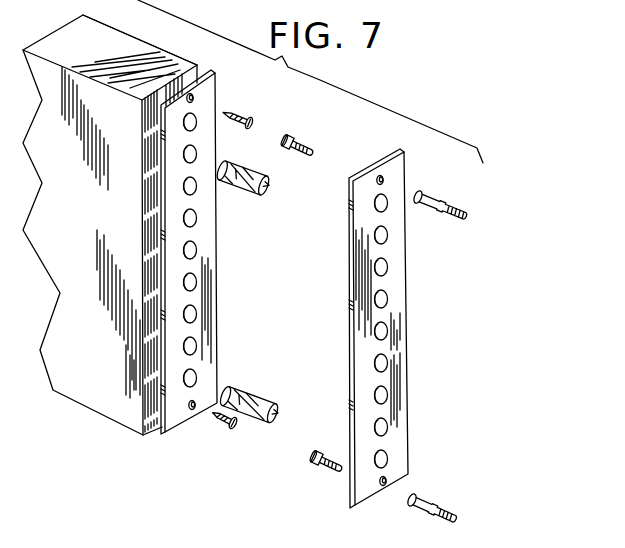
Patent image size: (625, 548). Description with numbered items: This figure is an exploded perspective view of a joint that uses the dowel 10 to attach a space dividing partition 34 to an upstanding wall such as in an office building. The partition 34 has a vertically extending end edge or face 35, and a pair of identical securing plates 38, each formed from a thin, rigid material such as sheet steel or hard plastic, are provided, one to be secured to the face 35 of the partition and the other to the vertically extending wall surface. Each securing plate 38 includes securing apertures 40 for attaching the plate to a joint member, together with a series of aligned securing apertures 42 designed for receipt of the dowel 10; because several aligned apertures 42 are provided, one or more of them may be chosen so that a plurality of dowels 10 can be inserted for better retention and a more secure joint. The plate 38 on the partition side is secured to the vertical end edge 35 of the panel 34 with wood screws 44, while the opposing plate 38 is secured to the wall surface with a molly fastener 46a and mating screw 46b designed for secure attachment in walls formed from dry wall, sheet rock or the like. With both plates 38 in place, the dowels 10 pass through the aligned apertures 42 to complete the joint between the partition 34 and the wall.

The dowel 10 is at (237, 188).
The space dividing partition 34 is at (143, 58).
The end edge 35 is at (152, 325).
The securing plate 38 is at (207, 297).
The securing aperture 40 is at (196, 96).
The securing aperture 42 is at (186, 160).
The wood screws 44 is at (242, 114).
The molly fastener 46a is at (438, 194).
The mating screw 46b is at (307, 147).